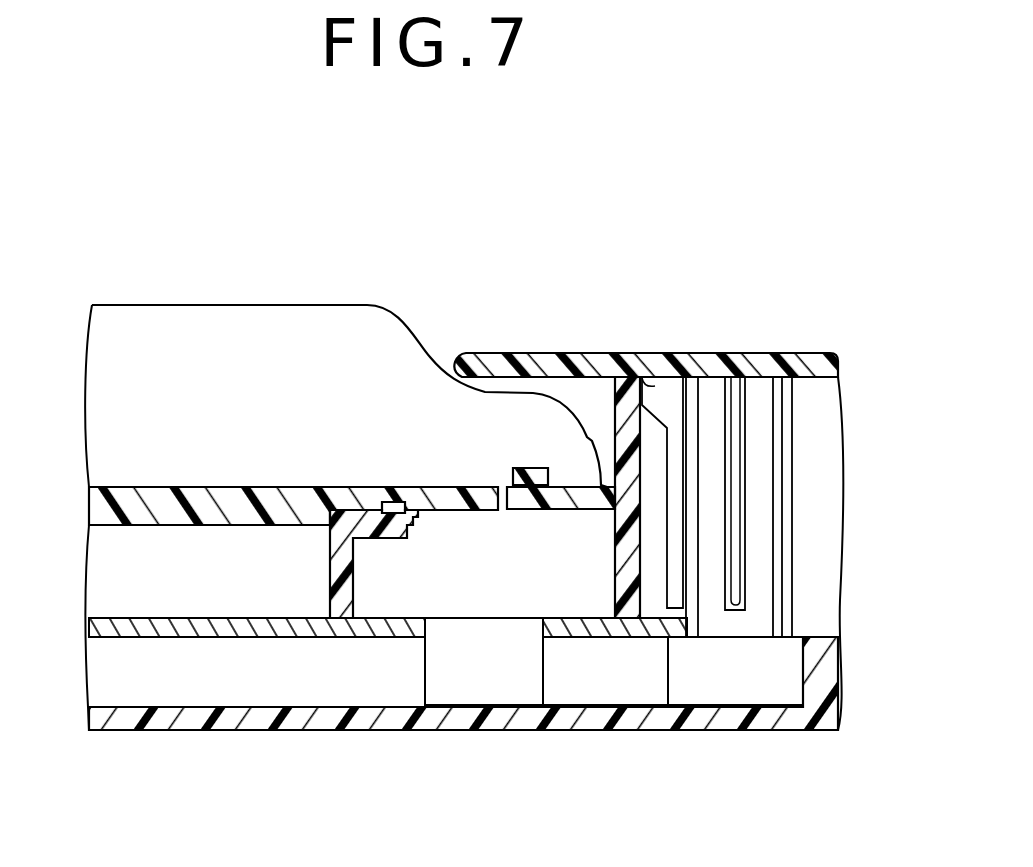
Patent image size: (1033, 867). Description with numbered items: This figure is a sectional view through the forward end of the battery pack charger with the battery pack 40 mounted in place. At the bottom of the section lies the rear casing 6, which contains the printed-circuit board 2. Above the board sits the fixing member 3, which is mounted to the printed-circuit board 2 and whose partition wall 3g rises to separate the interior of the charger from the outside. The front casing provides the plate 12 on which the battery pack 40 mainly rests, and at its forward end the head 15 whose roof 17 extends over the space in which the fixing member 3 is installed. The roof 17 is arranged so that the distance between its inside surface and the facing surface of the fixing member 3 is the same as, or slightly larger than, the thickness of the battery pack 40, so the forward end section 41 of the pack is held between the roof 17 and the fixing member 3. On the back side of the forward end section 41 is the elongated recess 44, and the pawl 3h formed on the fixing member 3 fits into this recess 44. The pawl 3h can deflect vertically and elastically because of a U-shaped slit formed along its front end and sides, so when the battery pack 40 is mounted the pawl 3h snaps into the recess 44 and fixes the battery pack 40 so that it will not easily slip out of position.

The battery pack 40 is at (195, 313).
The forward end section 41 is at (494, 392).
The plate 12 is at (190, 505).
The fixing member 3 is at (413, 523).
The pawl 3h is at (533, 486).
The elongated recess 44 is at (513, 475).
The partition wall 3g is at (653, 377).
The roof 17 is at (533, 352).
The head 15 is at (755, 353).
The printed-circuit board 2 is at (590, 638).
The rear casing 6 is at (655, 720).